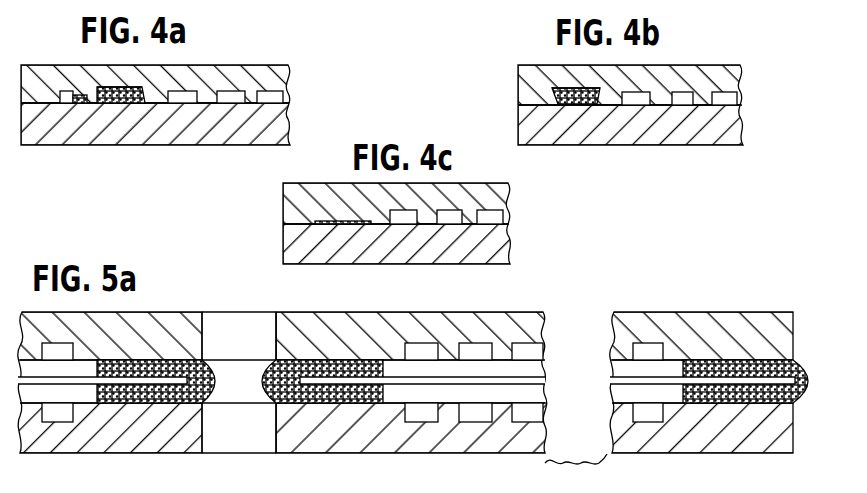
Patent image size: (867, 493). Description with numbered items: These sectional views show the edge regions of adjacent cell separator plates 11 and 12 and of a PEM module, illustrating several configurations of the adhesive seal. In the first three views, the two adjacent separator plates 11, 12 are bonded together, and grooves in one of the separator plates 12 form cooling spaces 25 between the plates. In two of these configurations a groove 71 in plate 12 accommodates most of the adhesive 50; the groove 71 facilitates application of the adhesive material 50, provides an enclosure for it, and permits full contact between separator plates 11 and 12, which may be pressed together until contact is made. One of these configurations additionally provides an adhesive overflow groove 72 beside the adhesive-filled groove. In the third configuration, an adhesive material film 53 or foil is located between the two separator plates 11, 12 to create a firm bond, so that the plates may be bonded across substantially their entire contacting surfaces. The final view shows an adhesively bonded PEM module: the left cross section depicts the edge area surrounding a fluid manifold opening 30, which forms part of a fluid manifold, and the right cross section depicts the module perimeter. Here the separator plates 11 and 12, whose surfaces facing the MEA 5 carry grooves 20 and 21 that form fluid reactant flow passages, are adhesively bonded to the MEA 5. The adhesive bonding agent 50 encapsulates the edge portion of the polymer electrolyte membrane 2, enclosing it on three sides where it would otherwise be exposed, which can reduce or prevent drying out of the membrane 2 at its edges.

In FIG. 5a, the polymer electrolyte membrane 2 is at (773, 384).
In FIG. 5a, the MEA 5 is at (551, 360).
In FIG. 4a, the cell separator plate 11 is at (278, 128).
In FIG. 4b, the cell separator plate 11 is at (723, 138).
In FIG. 4c, the cell separator plate 11 is at (500, 256).
In FIG. 5a, the cell separator plate 11 is at (725, 320).
In FIG. 4a, the cell separator plate 12 is at (278, 76).
In FIG. 4b, the cell separator plate 12 is at (730, 78).
In FIG. 4c, the cell separator plate 12 is at (502, 200).
In FIG. 5a, the cell separator plate 12 is at (755, 442).
In FIG. 5a, the grooves 20 is at (476, 352).
In FIG. 5a, the grooves 21 is at (486, 413).
In FIG. 4a, the cooling spaces 25 is at (232, 93).
In FIG. 4b, the cooling spaces 25 is at (685, 98).
In FIG. 4c, the cooling spaces 25 is at (462, 212).
In FIG. 5a, the fluid manifold opening 30 is at (233, 327).
In FIG. 4a, the adhesive 50 is at (103, 103).
In FIG. 4b, the adhesive 50 is at (557, 105).
In FIG. 5a, the adhesive 50 is at (262, 402).
In FIG. 4c, the adhesive material film 53 is at (334, 221).
In FIG. 4a, the groove 71 is at (145, 103).
In FIG. 4b, the groove 71 is at (551, 96).
In FIG. 4a, the adhesive overflow groove 72 is at (69, 92).